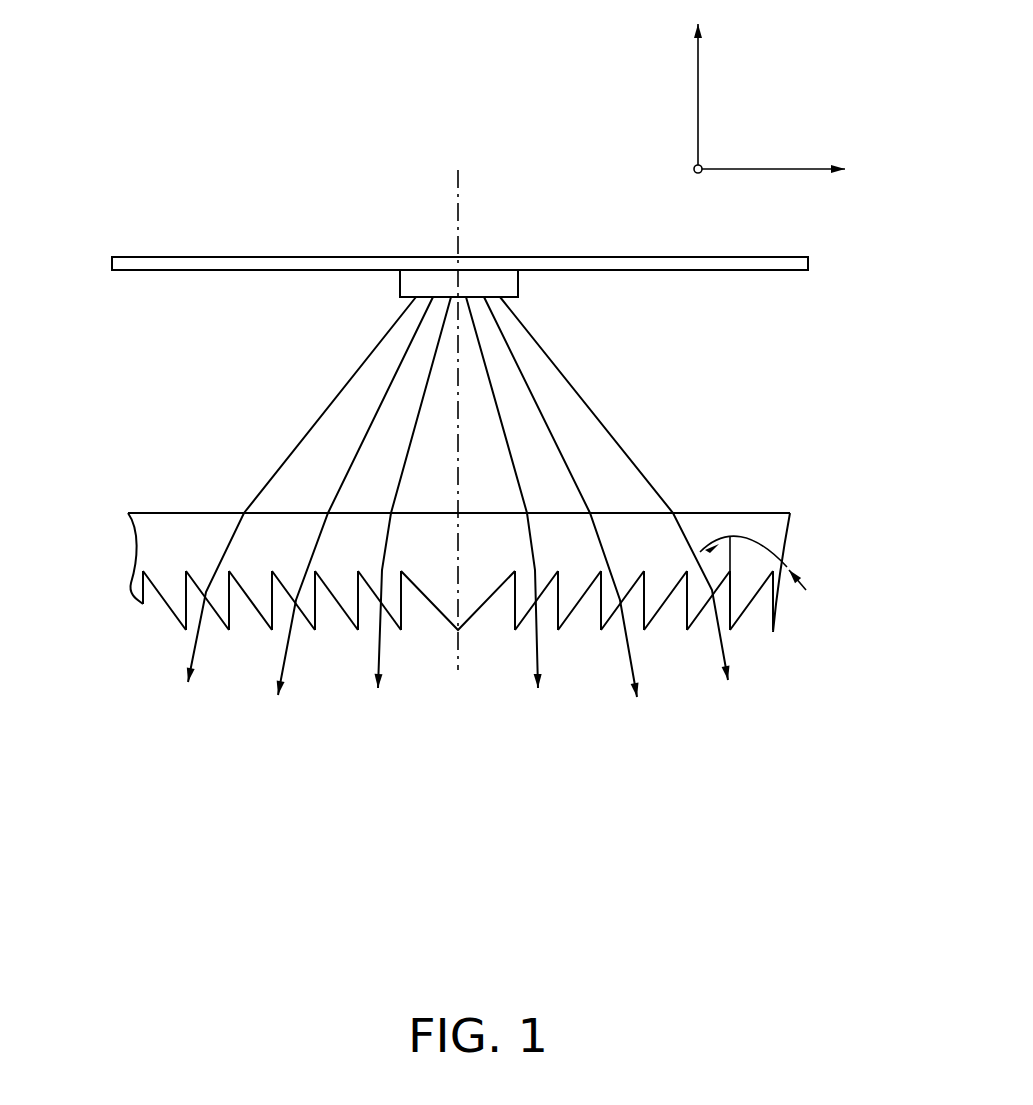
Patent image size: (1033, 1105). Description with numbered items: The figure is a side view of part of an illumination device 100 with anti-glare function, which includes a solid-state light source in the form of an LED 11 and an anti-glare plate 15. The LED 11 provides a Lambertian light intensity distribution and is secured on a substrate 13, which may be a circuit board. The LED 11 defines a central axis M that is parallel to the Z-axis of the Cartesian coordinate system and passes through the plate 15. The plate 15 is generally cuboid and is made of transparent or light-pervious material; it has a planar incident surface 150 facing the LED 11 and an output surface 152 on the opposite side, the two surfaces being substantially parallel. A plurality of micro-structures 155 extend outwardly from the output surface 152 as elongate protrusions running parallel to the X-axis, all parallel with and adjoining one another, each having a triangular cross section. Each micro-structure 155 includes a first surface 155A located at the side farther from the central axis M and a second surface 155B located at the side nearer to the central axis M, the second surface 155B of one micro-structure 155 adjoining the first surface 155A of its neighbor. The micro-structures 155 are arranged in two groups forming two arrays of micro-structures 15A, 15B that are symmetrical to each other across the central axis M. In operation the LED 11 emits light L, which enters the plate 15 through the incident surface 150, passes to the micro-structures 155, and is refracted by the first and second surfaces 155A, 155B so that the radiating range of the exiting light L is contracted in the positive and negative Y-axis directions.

The illumination device 100 is at (503, 114).
The LED 11 is at (414, 284).
The substrate 13 is at (290, 266).
The anti-glare plate 15 is at (74, 452).
The incident surface 150 is at (170, 513).
The output surface 152 is at (182, 580).
The micro-structures 155 is at (264, 582).
The first surface 155A is at (344, 614).
The second surface 155B is at (358, 618).
The array of micro-structures 15A is at (240, 672).
The array of micro-structures 15B is at (683, 667).
The light L is at (458, 525).
The central axis M is at (476, 419).